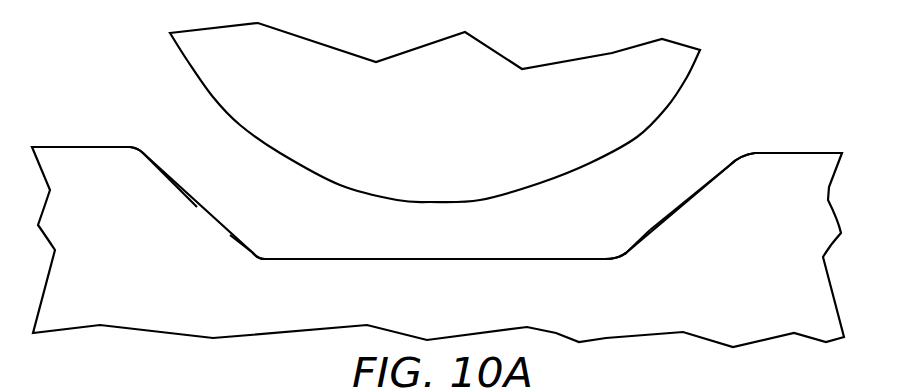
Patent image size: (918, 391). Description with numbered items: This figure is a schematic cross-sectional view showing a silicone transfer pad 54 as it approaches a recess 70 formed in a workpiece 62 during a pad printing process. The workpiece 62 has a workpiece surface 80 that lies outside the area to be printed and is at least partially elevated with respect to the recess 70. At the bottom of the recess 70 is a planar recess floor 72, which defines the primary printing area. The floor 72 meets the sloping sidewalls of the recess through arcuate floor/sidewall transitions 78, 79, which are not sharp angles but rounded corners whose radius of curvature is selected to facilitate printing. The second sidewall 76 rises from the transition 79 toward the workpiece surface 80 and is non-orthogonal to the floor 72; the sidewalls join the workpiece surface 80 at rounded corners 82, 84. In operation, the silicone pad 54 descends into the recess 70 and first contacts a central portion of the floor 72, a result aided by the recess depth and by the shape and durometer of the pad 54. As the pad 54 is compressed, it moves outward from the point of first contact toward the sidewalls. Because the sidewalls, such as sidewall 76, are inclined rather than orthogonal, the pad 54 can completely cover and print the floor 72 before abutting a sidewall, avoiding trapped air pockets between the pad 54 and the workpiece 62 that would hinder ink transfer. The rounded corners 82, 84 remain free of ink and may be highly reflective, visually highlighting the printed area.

The silicone pad 54 is at (443, 133).
The workpiece 62 is at (773, 273).
The recess 70 is at (670, 145).
The recess floor 72 is at (345, 255).
The second sidewall 76 is at (688, 203).
The floor/sidewall transition 78 is at (257, 250).
The floor/sidewall transition 79 is at (621, 253).
The workpiece surface 80 is at (53, 145).
The rounded corner 82 is at (138, 152).
The rounded corner 84 is at (728, 165).